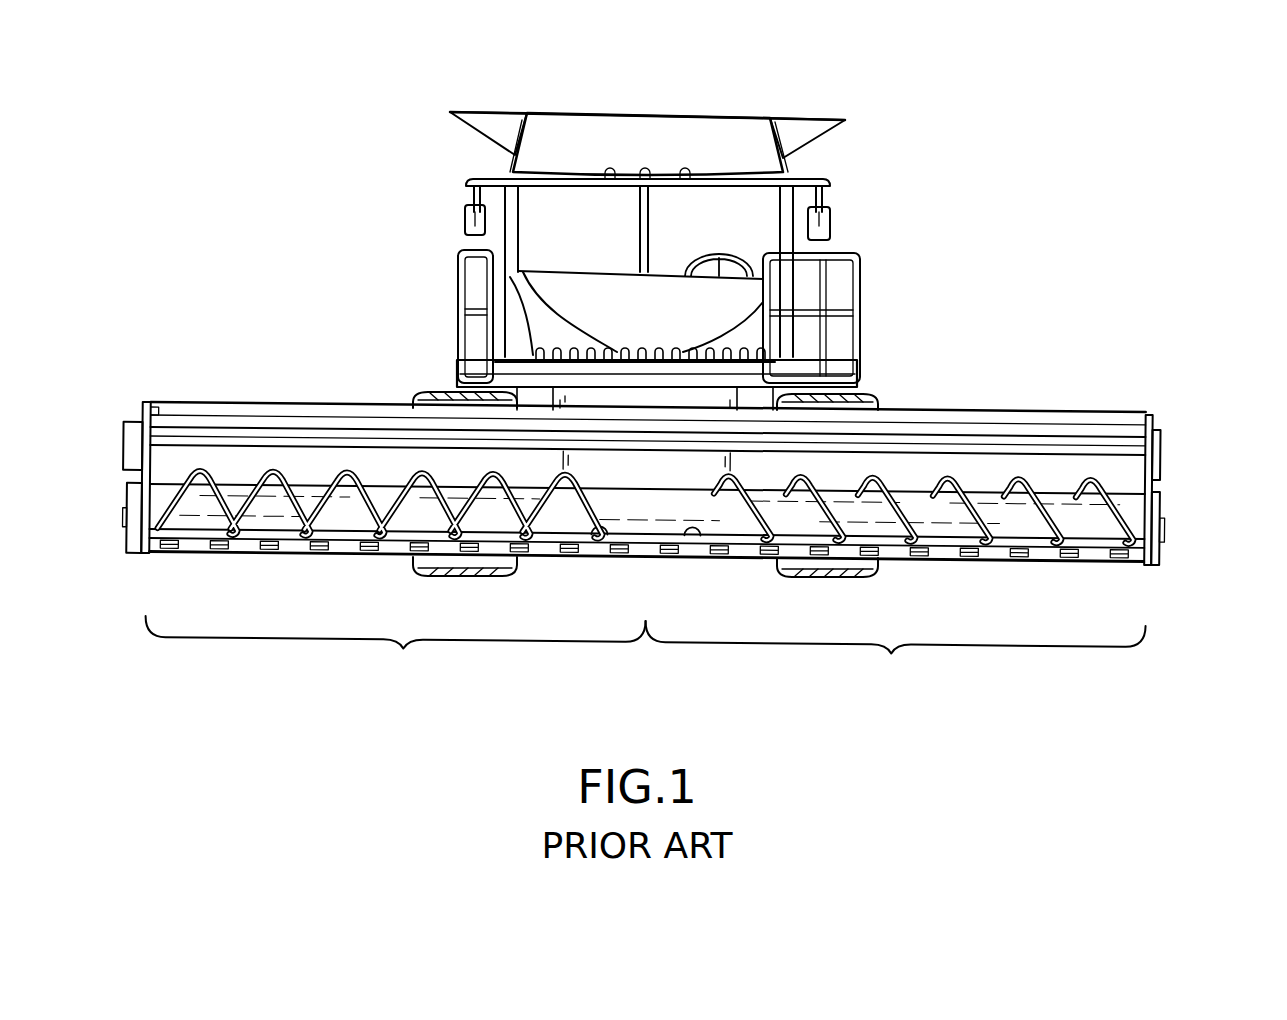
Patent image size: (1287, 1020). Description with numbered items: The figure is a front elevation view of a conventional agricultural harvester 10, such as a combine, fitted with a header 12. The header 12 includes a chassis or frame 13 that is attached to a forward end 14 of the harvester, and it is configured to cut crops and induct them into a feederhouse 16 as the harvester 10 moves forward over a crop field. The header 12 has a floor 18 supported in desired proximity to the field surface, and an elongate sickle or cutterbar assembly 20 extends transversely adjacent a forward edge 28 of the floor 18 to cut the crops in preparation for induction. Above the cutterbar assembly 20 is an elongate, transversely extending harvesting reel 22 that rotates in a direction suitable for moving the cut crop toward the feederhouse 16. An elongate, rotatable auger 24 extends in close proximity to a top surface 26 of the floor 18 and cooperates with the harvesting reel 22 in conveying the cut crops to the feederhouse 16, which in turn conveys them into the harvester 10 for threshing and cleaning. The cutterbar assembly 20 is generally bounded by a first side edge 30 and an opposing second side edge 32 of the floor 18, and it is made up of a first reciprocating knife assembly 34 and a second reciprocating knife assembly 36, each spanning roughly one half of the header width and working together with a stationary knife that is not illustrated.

The agricultural harvester 10 is at (569, 331).
The header 12 is at (647, 505).
The chassis or frame 13 is at (130, 440).
The forward end 14 is at (478, 383).
The feederhouse 16 is at (740, 410).
The floor 18 is at (285, 527).
The cutterbar assembly 20 is at (1028, 562).
The harvesting reel 22 is at (1153, 420).
The auger 24 is at (1117, 495).
The top surface 26 is at (202, 535).
The forward edge 28 is at (352, 545).
The first side edge 30 is at (135, 538).
The second side edge 32 is at (1162, 550).
The first reciprocating knife assembly 34 is at (395, 649).
The second reciprocating knife assembly 36 is at (895, 654).